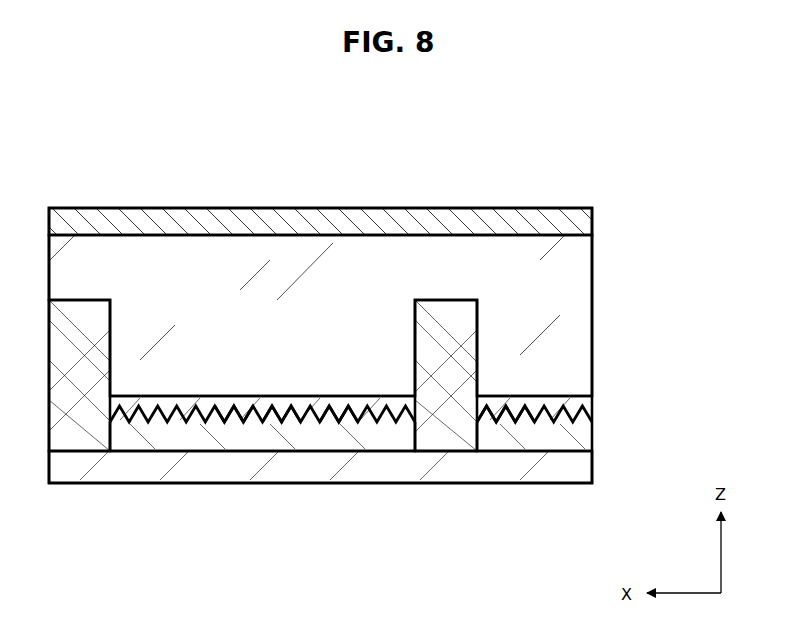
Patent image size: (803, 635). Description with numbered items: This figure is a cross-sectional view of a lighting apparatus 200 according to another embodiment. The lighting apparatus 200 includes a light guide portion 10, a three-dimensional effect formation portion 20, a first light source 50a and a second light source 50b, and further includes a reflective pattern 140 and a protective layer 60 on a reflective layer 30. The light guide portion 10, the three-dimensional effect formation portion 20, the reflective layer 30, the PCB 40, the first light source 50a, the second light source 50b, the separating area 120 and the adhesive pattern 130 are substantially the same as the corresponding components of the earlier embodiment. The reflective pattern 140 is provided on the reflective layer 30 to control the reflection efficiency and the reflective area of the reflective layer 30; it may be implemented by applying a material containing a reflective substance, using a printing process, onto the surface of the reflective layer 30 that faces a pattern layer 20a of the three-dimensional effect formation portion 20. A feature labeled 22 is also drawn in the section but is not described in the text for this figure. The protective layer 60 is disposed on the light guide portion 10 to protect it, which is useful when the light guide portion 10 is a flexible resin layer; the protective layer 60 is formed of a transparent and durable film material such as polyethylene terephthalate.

The lighting apparatus 200 is at (117, 183).
The protective layer 60 is at (580, 224).
The light guide portion 10 is at (582, 297).
The pattern layer 20a is at (586, 396).
The three-dimensional effect formation portion 20 is at (199, 422).
The protrusion 22 is at (233, 422).
The reflective pattern 140 is at (280, 422).
The separating area 120 is at (330, 422).
The adhesive pattern 130 is at (503, 424).
The reflective layer 30 is at (582, 435).
The PCB 40 is at (582, 468).
The first light source 50a is at (63, 438).
The second light source 50b is at (438, 443).